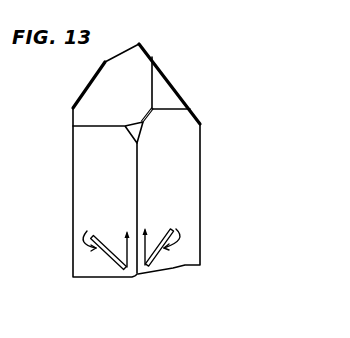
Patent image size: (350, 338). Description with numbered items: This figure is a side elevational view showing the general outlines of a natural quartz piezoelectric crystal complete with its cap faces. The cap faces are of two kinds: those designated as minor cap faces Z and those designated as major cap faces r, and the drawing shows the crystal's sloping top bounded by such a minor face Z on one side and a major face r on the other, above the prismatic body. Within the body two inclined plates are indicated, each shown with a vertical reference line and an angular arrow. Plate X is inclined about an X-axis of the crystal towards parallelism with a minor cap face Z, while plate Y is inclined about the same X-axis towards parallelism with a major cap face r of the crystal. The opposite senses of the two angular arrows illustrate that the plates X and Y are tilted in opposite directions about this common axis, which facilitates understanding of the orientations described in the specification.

The major cap face r is at (158, 83).
The minor cap face Z is at (120, 79).
The plate X is at (162, 242).
The plate Y is at (105, 244).